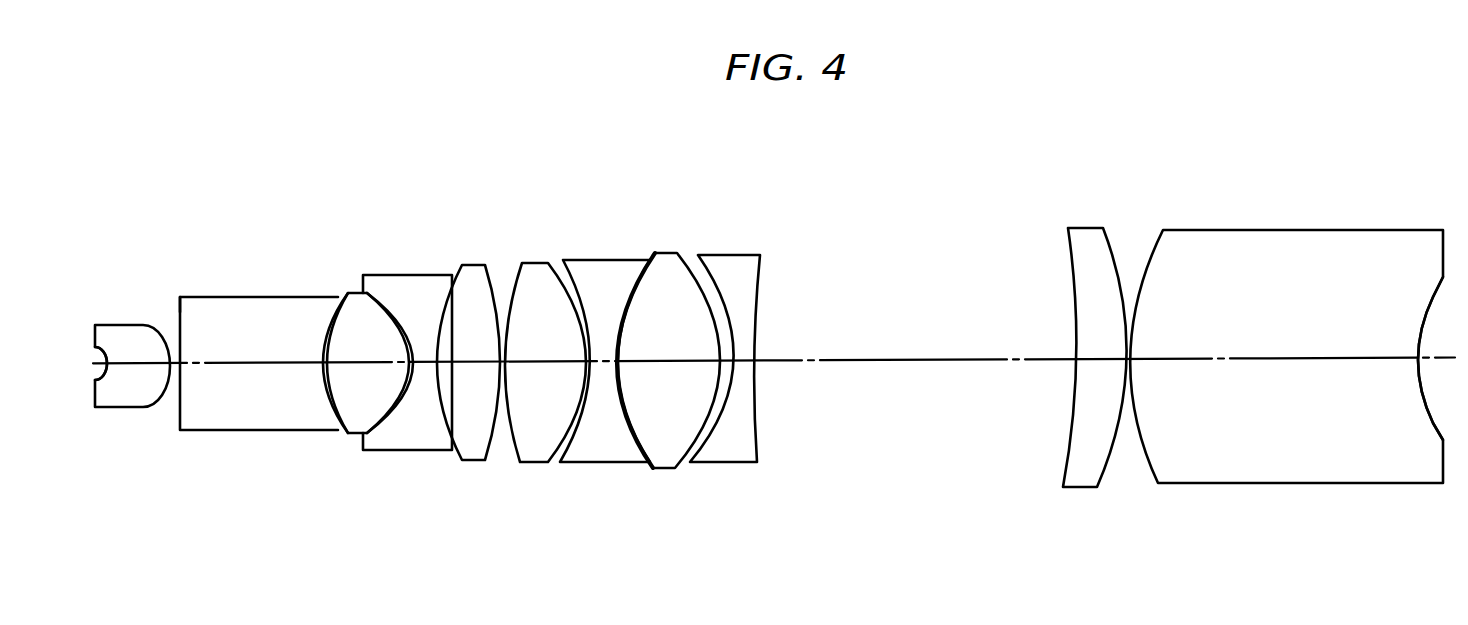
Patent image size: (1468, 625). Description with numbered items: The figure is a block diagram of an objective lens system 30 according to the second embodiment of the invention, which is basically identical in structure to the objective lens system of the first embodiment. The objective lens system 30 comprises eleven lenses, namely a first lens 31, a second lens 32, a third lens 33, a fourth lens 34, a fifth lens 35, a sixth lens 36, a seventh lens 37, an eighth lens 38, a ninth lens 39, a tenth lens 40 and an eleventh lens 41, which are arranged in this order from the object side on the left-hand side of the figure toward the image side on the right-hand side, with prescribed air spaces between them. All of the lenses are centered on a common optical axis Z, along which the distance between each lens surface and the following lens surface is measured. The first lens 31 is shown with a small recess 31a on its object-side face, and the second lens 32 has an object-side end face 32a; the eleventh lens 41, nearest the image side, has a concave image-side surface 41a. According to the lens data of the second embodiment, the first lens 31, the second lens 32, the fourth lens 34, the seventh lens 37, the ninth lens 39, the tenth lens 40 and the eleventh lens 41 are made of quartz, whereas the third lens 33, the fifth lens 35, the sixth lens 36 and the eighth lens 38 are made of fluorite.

The objective lens system 30 is at (1238, 182).
The first lens 31 is at (130, 400).
The recess of light source 31a is at (98, 357).
The second lens 32 is at (243, 427).
The end face of light guide rod 32a is at (179, 306).
The third lens 33 is at (355, 433).
The fourth lens 34 is at (422, 448).
The fifth lens 35 is at (473, 460).
The sixth lens 36 is at (535, 462).
The seventh lens 37 is at (608, 462).
The eighth lens 38 is at (670, 468).
The ninth lens 39 is at (733, 462).
The tenth lens 40 is at (1097, 487).
The eleventh lens 41 is at (1285, 483).
The concave surface of lens element 41a is at (1427, 413).
The optical axis Z is at (862, 360).